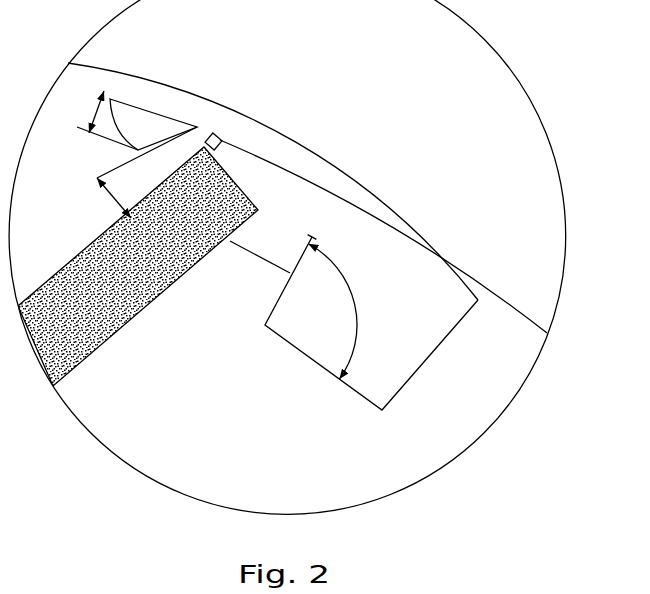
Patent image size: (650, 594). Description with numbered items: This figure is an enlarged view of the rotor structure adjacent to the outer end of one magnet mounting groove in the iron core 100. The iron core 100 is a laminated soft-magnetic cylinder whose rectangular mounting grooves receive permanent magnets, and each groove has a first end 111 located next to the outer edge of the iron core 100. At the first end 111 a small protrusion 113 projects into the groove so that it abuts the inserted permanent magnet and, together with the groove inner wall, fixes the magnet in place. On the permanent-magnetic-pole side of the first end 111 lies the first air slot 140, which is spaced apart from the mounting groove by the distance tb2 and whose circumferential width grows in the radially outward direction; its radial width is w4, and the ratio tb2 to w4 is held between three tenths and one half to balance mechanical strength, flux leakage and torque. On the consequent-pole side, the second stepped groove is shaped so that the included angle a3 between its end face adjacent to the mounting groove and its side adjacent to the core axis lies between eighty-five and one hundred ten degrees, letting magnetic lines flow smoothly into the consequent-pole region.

The iron core 100 is at (170, 447).
The first end 111 is at (235, 180).
The protrusion 113 is at (210, 138).
The first air slot 140 is at (137, 123).
The distance between the first air slot and the mounting groove tb2 is at (97, 178).
The radial width of the first air slot w4 is at (86, 110).
The included angle a3 is at (348, 311).